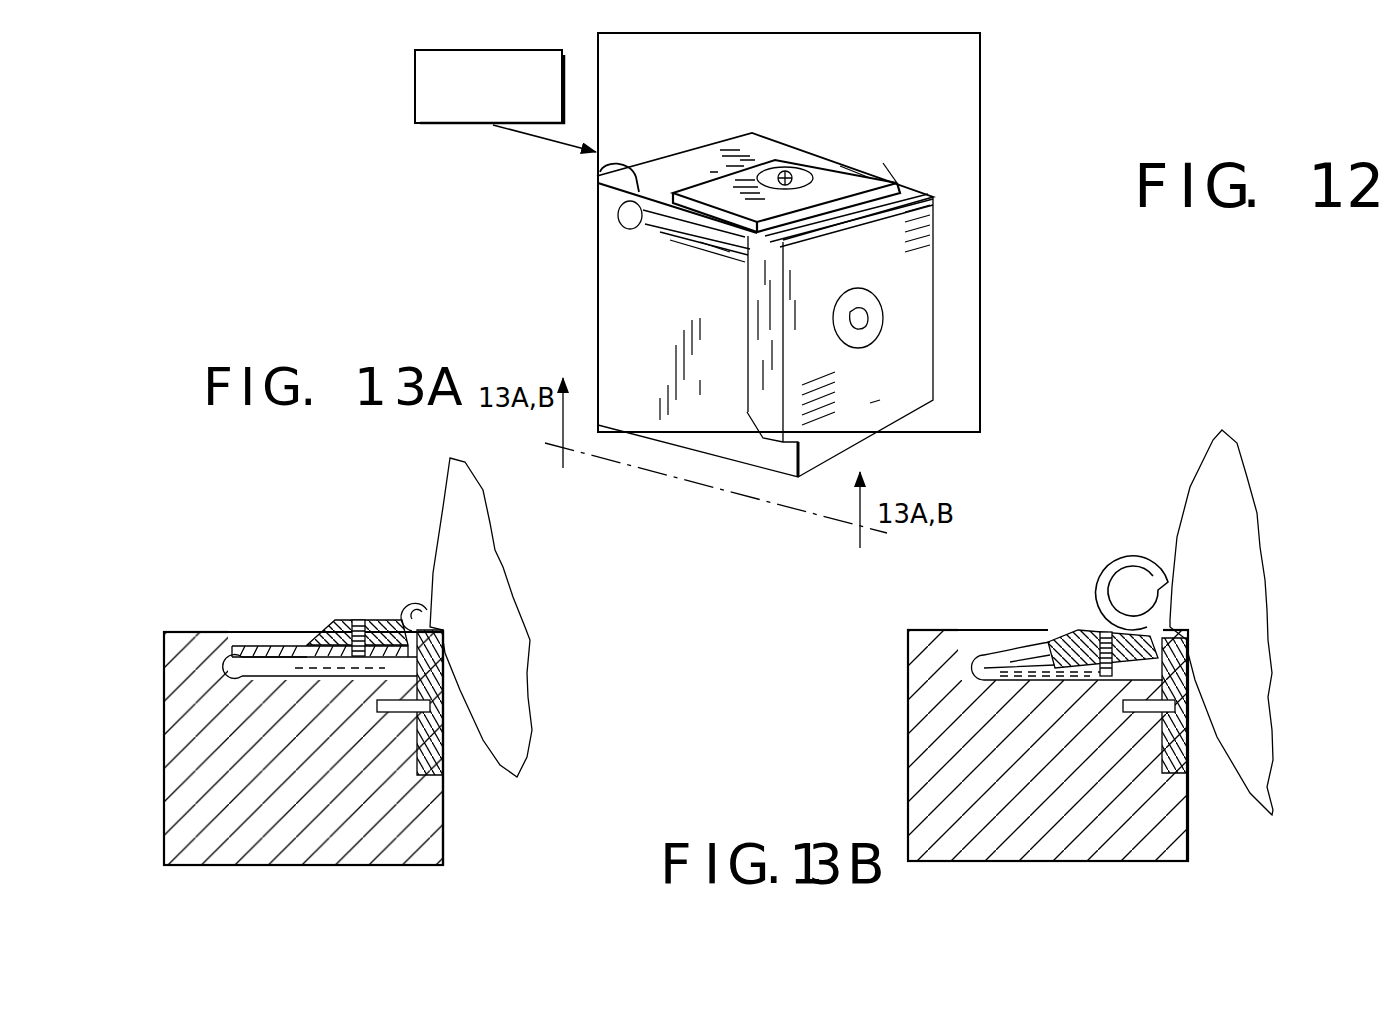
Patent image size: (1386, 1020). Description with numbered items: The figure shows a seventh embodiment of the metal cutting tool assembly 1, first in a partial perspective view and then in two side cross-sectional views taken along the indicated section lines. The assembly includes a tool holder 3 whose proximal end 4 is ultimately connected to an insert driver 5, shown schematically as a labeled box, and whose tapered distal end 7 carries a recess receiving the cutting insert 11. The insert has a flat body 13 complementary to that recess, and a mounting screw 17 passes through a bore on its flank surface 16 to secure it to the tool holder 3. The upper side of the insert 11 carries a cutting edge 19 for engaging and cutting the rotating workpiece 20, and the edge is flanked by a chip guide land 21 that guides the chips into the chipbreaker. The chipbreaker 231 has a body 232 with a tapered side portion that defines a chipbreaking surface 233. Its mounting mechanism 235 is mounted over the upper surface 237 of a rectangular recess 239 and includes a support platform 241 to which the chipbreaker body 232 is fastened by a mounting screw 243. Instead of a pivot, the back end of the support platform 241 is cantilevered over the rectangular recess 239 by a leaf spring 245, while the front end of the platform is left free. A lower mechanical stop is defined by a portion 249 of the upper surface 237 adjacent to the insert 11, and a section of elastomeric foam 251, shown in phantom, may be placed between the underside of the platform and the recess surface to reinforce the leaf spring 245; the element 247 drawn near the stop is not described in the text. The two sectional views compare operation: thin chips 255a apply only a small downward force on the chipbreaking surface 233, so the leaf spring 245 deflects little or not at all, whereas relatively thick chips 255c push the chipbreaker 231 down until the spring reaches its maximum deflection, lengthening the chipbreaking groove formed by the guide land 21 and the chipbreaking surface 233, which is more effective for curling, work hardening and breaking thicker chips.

In FIG. 12, the metal cutting tool assembly 1 is at (1040, 105).
In FIG. 12, the tool holder 3 is at (789, 299).
In FIG. 12, the proximal end 4 is at (596, 70).
In FIG. 12, the insert driver 5 is at (413, 115).
In FIG. 12, the distal end 7 is at (697, 432).
In FIG. 12, the cutting insert 11 is at (868, 262).
In FIG. 12, the flat body 13 is at (767, 420).
In FIG. 12, the flank surface 16 is at (870, 403).
In FIG. 12, the mounting screw 17 is at (865, 338).
In FIG. 12, the cutting edge 19 is at (940, 223).
In FIG. 12, the chip guide land 21 is at (707, 242).
In FIG. 13A, the rotating workpiece 20 is at (475, 569).
In FIG. 13B, the rotating workpiece 20 is at (1232, 570).
In FIG. 12, the chipbreaker 231 is at (815, 142).
In FIG. 13A, the chipbreaker 231 is at (318, 557).
In FIG. 12, the chipbreaker body 232 is at (843, 166).
In FIG. 12, the chipbreaking surface 233 is at (920, 165).
In FIG. 12, the mounting mechanism 235 is at (714, 160).
In FIG. 13A, the mounting mechanism 235 is at (267, 596).
In FIG. 13B, the mounting mechanism 235 is at (982, 605).
In FIG. 12, the upper surface 237 is at (655, 226).
In FIG. 12, the rectangular recess 239 is at (686, 245).
In FIG. 13A, the rectangular recess 239 is at (232, 680).
In FIG. 13B, the rectangular recess 239 is at (968, 688).
In FIG. 12, the support platform 241 is at (666, 233).
In FIG. 13A, the support platform 241 is at (268, 652).
In FIG. 13B, the support platform 241 is at (1028, 662).
In FIG. 12, the mounting screw 243 is at (770, 163).
In FIG. 13A, the mounting screw 243 is at (358, 618).
In FIG. 12, the leaf spring 245 is at (596, 172).
In FIG. 13A, the leaf spring 245 is at (228, 658).
In FIG. 13B, the leaf spring 245 is at (968, 650).
In FIG. 13A, the flange plate 247 is at (445, 656).
In FIG. 13B, the flange plate 247 is at (1190, 670).
In FIG. 13A, the lower mechanical stop portion 249 is at (438, 689).
In FIG. 13B, the lower mechanical stop portion 249 is at (1175, 694).
In FIG. 13A, the elastomeric foam section 251 is at (313, 668).
In FIG. 13B, the elastomeric foam section 251 is at (1046, 665).
In FIG. 13A, the thin chips 255a is at (411, 603).
In FIG. 13B, the thick chips 255c is at (1140, 557).